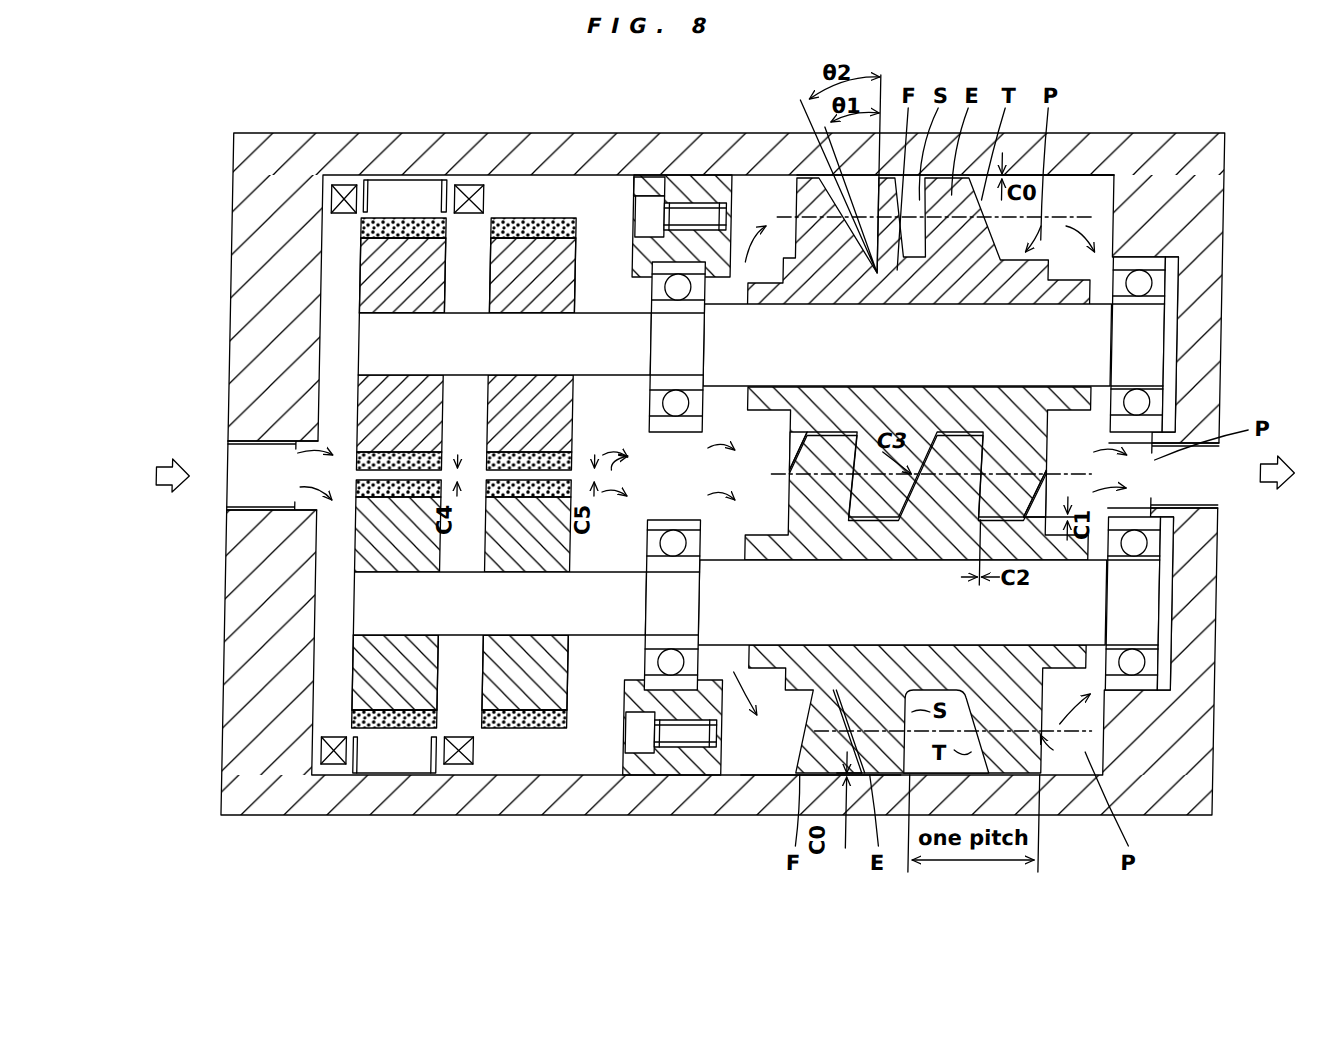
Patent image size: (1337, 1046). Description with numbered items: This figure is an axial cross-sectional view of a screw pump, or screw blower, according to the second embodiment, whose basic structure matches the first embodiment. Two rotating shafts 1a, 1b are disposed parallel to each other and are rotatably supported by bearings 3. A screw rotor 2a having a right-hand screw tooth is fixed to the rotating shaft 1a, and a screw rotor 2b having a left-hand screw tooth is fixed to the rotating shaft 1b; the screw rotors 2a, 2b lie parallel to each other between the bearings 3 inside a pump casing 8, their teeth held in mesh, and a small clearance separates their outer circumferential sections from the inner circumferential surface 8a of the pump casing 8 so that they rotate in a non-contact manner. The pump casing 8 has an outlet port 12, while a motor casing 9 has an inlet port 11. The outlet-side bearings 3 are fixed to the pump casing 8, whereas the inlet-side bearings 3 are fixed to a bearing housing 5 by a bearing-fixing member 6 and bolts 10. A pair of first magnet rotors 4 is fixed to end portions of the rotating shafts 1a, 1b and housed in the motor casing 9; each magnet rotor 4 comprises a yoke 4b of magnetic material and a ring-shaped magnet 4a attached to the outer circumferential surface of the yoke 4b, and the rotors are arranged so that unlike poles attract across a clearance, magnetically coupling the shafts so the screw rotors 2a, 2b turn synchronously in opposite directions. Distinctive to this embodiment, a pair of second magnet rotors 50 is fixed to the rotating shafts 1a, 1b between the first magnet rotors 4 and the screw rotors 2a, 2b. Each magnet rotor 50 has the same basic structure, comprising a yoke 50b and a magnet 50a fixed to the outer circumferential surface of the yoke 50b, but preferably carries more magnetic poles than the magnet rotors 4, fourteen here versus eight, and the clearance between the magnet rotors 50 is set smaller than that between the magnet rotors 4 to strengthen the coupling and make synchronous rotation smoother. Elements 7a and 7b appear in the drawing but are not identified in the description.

The rotating shaft 1a is at (375, 338).
The rotating shaft 1b is at (381, 601).
The screw rotor 2a is at (1150, 212).
The screw rotor 2b is at (1058, 746).
The bearings 3 is at (662, 262).
The magnet rotors 4 is at (354, 380).
The magnet 4a is at (360, 230).
The yoke 4b is at (365, 268).
The bearing housing 5 is at (650, 205).
The bearing-fixing member 6 is at (742, 186).
The motor stator plate 7a is at (381, 772).
The motor coil 7b is at (341, 752).
The pump casing 8 is at (1095, 152).
The inner circumferential surface 8a is at (1065, 182).
The motor casing 9 is at (300, 292).
The bolts 10 is at (632, 190).
The inlet port 11 is at (303, 458).
The outlet port 12 is at (1207, 498).
The magnet rotors 50 is at (551, 212).
The magnet 50a is at (505, 240).
The yoke 50b is at (528, 262).